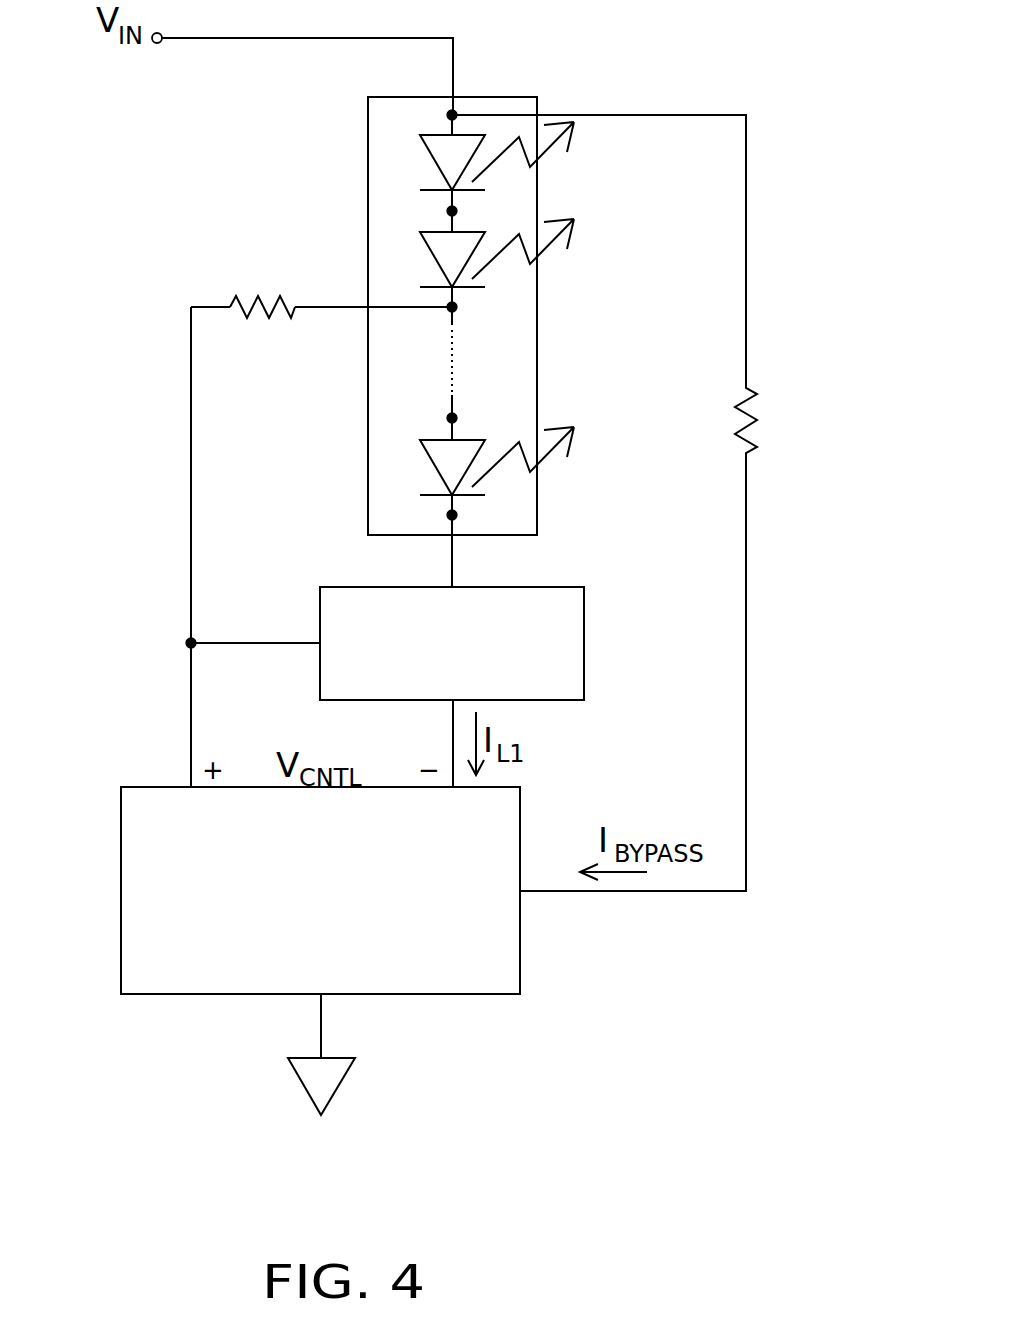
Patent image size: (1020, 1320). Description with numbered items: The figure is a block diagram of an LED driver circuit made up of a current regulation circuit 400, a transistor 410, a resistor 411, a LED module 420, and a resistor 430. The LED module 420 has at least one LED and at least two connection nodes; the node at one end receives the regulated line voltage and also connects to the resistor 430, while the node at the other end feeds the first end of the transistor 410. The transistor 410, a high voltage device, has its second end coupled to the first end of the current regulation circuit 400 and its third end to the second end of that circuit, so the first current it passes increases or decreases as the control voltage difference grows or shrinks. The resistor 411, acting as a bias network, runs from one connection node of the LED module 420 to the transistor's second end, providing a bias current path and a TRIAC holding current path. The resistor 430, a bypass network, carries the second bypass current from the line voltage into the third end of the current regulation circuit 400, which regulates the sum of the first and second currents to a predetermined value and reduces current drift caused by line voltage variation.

The current regulation circuit 400 is at (521, 950).
The transistor 410 is at (584, 643).
The resistor 411 is at (252, 300).
The LED module 420 is at (537, 323).
The resistor 430 is at (755, 434).